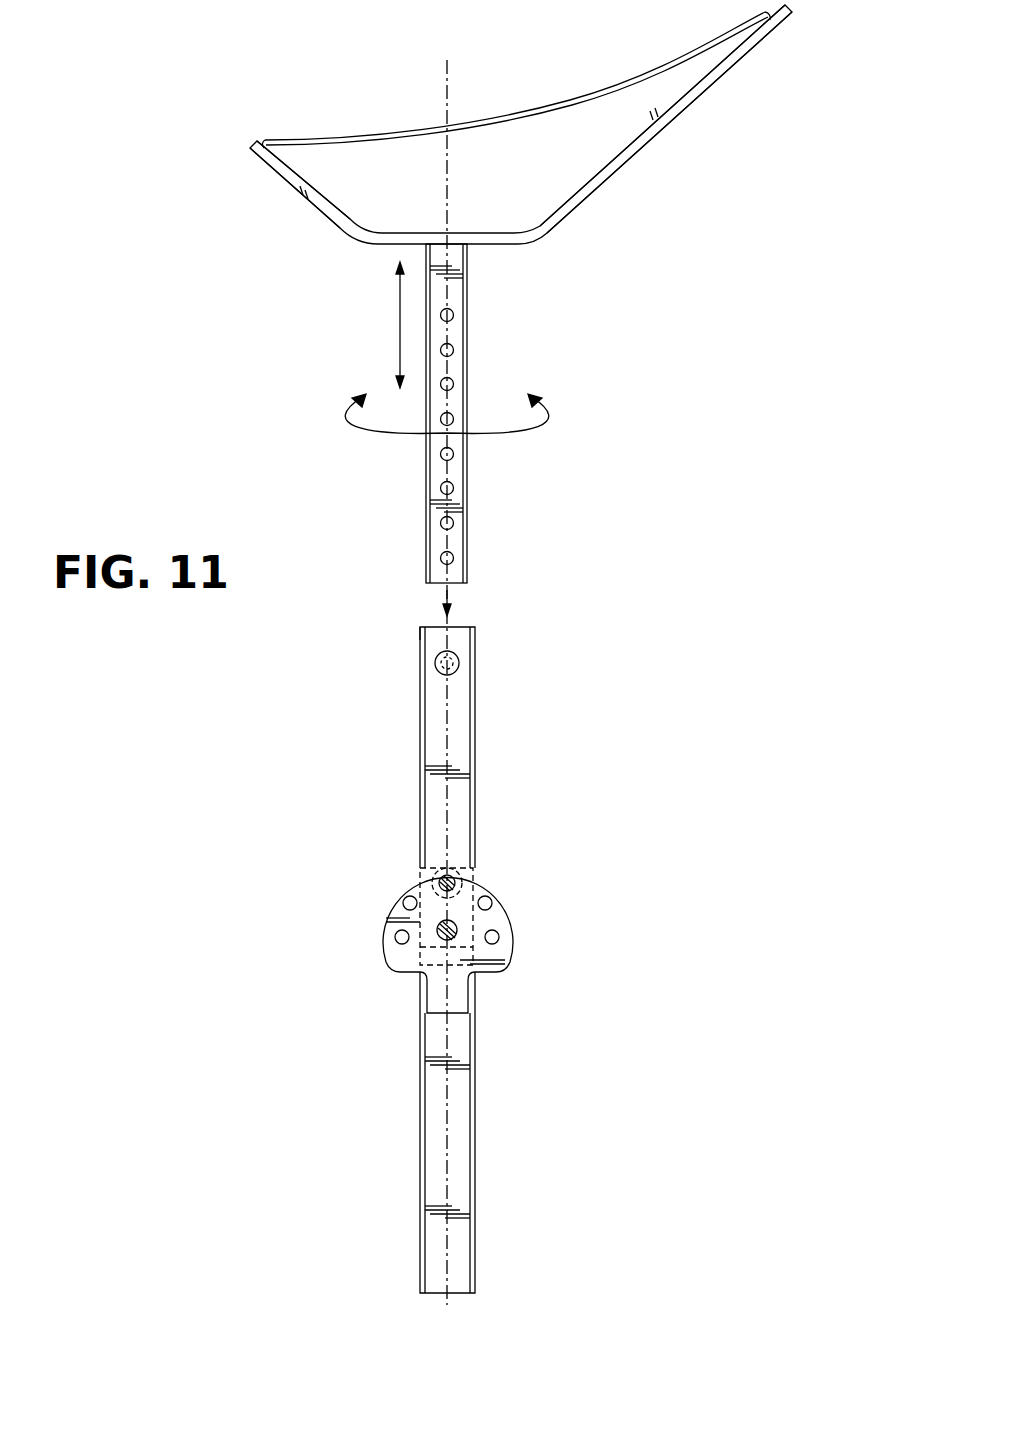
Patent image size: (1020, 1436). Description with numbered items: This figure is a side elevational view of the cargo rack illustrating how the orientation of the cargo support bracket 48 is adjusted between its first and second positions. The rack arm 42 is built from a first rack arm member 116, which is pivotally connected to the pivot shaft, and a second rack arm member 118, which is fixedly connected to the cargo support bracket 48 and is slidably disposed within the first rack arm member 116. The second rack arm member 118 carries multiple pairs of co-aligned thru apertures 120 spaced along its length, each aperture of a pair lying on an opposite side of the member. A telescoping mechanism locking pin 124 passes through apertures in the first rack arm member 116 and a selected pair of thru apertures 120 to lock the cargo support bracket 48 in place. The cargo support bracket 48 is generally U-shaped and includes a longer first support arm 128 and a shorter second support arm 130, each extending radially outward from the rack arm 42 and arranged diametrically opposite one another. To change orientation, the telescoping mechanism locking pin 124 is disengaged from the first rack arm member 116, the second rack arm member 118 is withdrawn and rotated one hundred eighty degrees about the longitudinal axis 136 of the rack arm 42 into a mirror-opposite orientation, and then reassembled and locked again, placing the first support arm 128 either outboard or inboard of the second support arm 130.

The rack arm 42 is at (418, 700).
The cargo support bracket 48 is at (647, 140).
The first rack arm member 116 is at (476, 740).
The second rack arm member 118 is at (467, 296).
The thru apertures 120 is at (454, 488).
The telescoping mechanism locking pin 124 is at (460, 663).
The first support arm 128 is at (290, 185).
The second support arm 130 is at (740, 57).
The longitudinal axis 136 is at (440, 93).